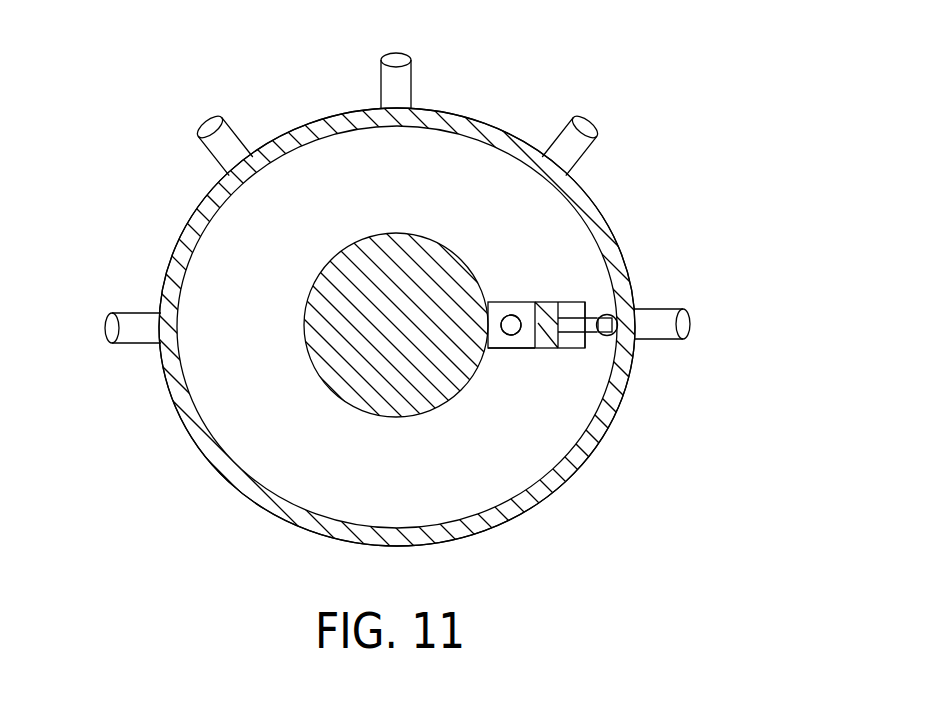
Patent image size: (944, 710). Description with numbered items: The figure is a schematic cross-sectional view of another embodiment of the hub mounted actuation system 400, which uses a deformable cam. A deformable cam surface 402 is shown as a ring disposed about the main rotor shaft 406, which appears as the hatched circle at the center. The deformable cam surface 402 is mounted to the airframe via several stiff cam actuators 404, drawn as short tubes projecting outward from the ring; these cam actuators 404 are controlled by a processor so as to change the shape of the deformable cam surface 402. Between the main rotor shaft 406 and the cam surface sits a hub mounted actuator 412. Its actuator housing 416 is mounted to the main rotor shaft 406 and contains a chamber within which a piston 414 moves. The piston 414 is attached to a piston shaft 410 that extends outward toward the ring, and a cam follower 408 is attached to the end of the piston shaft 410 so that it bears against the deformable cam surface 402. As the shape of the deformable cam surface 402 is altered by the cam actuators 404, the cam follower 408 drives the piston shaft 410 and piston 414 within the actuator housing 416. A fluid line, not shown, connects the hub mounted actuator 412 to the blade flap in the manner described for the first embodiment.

The hub mounted actuation system embodiment 400 is at (713, 172).
The deformable cam surface 402 is at (570, 480).
The cam actuators 404 is at (381, 82).
The main rotor shaft 406 is at (391, 418).
The cam follower 408 is at (604, 336).
The piston shaft 410 is at (568, 302).
The hub mounted actuator 412 is at (507, 285).
The piston 414 is at (540, 348).
The actuator housing 416 is at (503, 348).